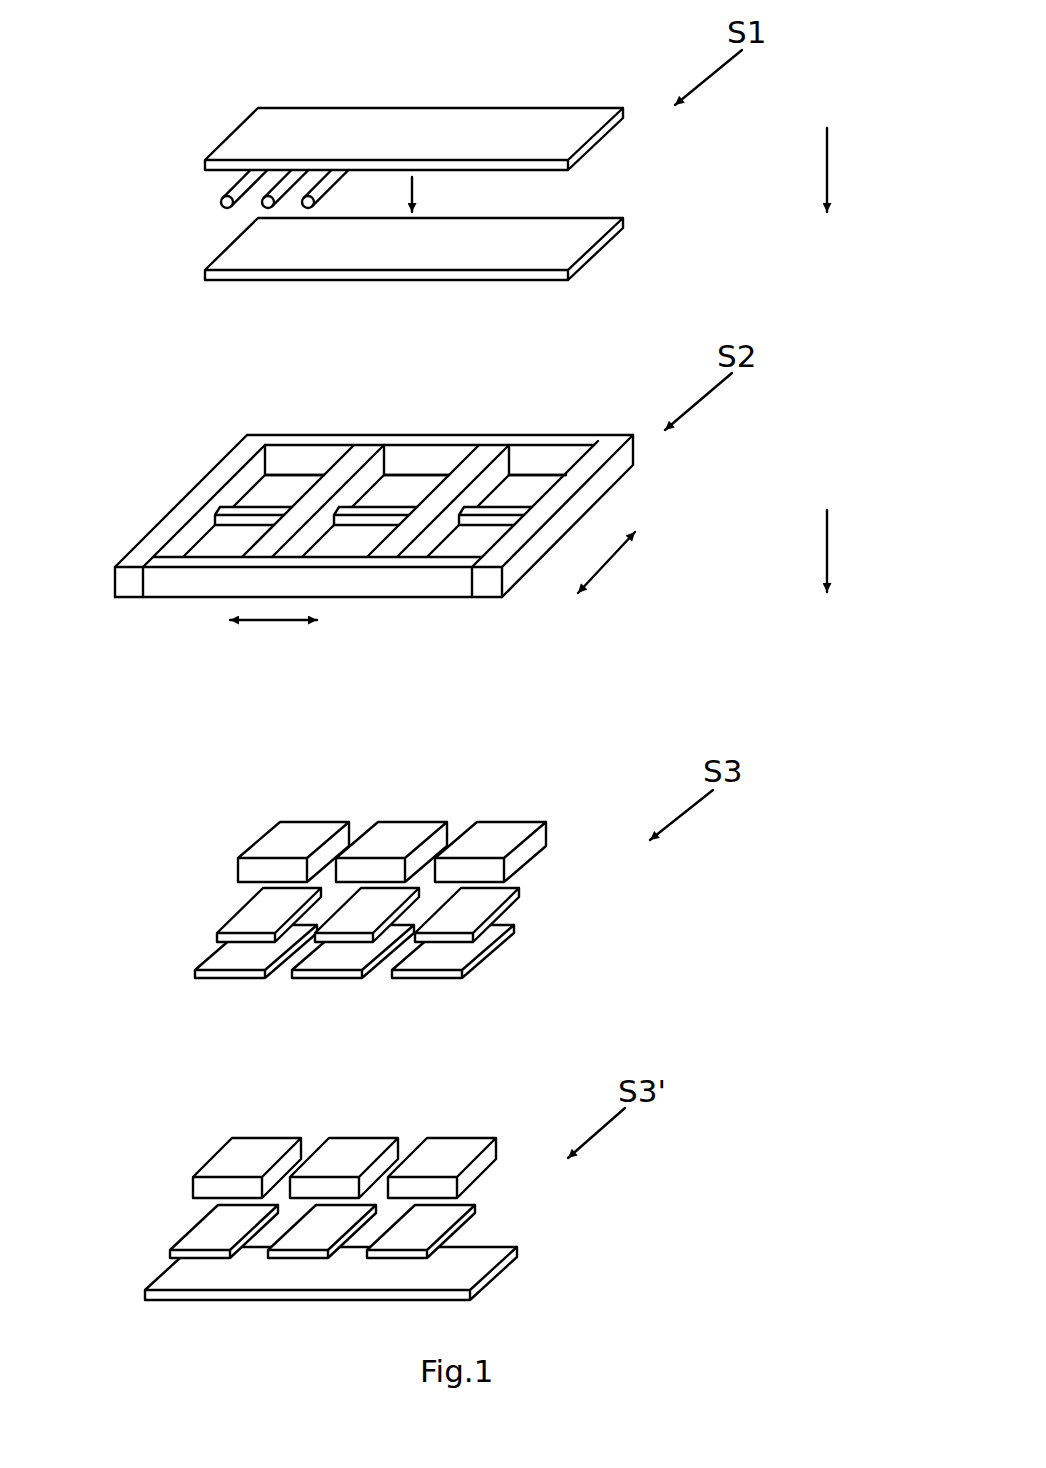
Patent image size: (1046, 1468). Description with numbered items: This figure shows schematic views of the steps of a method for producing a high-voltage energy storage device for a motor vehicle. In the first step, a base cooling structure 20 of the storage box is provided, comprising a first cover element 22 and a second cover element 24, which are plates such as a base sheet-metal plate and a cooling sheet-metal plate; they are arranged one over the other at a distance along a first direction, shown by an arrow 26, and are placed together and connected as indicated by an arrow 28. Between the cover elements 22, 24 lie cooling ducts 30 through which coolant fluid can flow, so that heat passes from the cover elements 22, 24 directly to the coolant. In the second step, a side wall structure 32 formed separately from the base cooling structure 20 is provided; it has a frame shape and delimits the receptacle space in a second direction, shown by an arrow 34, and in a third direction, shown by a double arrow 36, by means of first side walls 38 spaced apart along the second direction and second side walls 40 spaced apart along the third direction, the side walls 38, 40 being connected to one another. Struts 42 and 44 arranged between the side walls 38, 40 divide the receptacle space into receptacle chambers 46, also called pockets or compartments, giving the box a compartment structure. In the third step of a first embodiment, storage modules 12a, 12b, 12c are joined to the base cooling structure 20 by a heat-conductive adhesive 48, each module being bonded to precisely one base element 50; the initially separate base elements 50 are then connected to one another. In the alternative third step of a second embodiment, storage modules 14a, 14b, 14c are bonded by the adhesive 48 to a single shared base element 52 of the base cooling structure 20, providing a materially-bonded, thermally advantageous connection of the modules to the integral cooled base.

The storage module 12a is at (298, 837).
The storage module 12b is at (398, 837).
The storage module 12c is at (498, 837).
The storage module 14a is at (252, 1155).
The storage module 14b is at (352, 1155).
The storage module 14c is at (450, 1155).
The base cooling structure 20 is at (232, 110).
The first cover element 22 is at (557, 136).
The second cover element 24 is at (557, 247).
The arrow 26 is at (827, 162).
The arrow 28 is at (415, 183).
The cooling ducts 30 is at (213, 203).
The side wall structure 32 is at (663, 478).
The arrow 34 is at (607, 563).
The double arrow 36 is at (270, 622).
The first side walls 38 is at (447, 457).
The second side walls 40 is at (197, 498).
The strut 42 is at (357, 460).
The strut 44 is at (252, 518).
The receptacle chamber 46 is at (295, 458).
The heat-conductive adhesive 48 is at (490, 897).
The base element 50 is at (242, 962).
The base element 52 is at (255, 1263).